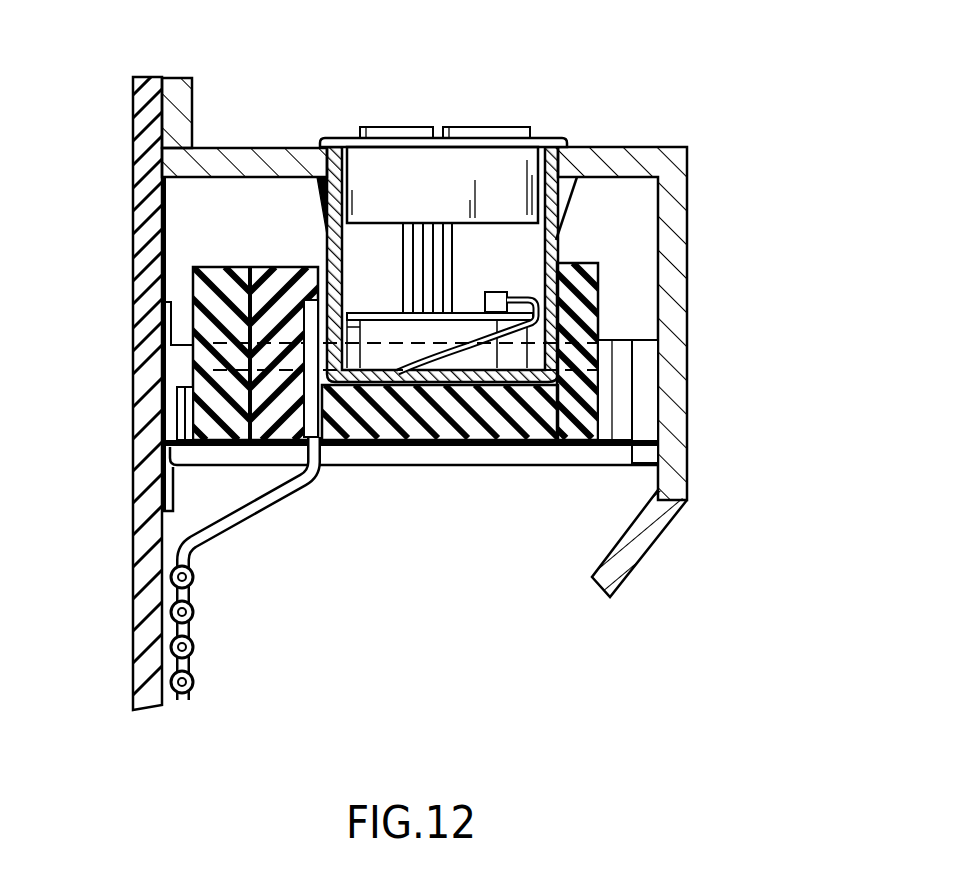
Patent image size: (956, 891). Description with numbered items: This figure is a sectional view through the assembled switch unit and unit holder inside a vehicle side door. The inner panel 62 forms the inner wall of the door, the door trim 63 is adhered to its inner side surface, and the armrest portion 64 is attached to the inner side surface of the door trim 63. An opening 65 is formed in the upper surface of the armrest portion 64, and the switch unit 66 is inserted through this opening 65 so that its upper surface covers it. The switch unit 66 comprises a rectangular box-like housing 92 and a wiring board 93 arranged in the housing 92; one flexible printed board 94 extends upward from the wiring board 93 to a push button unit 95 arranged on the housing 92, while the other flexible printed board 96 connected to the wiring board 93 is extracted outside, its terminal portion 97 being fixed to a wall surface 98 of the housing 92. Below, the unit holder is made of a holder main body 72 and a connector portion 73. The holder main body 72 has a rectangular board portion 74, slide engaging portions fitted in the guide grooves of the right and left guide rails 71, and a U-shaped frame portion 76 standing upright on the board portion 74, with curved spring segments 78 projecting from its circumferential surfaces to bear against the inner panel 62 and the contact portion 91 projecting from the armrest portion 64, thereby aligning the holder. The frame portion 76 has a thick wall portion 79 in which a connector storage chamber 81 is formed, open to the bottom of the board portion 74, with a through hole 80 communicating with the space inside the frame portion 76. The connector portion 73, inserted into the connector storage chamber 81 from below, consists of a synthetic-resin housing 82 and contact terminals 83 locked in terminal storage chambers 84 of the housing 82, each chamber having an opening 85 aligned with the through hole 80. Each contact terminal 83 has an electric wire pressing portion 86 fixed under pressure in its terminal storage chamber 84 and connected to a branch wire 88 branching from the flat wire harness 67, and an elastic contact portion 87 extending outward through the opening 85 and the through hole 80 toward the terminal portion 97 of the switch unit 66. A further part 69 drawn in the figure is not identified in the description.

The inner panel 62 is at (130, 115).
The door trim 63 is at (190, 116).
The armrest portion 64 is at (625, 150).
The opening 65 is at (345, 165).
The switch unit 66 is at (535, 130).
The flat wire harness 67 is at (198, 647).
The inner wall 69 is at (142, 170).
The guide rails 71 is at (482, 460).
The holder main body 72 is at (600, 281).
The connector portion 73 is at (281, 450).
The board portion 74 is at (432, 432).
The frame portion 76 is at (583, 315).
The spring segments 78 is at (181, 408).
The wall portion 79 is at (190, 283).
The through hole 80 is at (337, 290).
The connector storage chamber 81 is at (357, 352).
The housing 82 is at (178, 385).
The contact terminals 83 is at (365, 440).
The terminal storage chambers 84 is at (327, 267).
The opening 85 is at (340, 320).
The electric wire pressing portion 86 is at (207, 385).
The elastic contact portion 87 is at (193, 327).
The branch wire 88 is at (330, 445).
The contact portion 91 is at (640, 385).
The housing 92 is at (555, 237).
The wiring board 93 is at (465, 312).
The flexible printed board 94 is at (450, 250).
The push button unit 95 is at (400, 127).
The flexible printed board 96 is at (500, 380).
The terminal portion 97 is at (327, 267).
The wall surface 98 is at (327, 230).